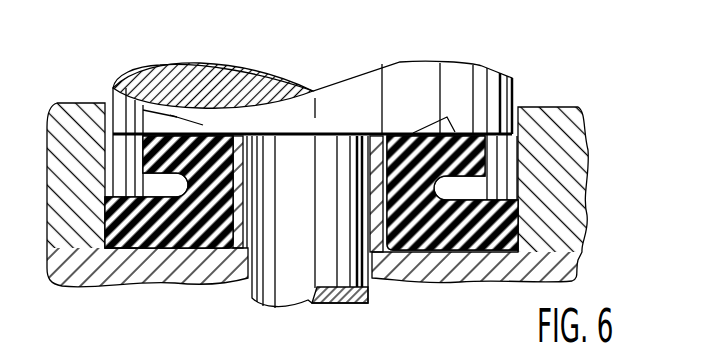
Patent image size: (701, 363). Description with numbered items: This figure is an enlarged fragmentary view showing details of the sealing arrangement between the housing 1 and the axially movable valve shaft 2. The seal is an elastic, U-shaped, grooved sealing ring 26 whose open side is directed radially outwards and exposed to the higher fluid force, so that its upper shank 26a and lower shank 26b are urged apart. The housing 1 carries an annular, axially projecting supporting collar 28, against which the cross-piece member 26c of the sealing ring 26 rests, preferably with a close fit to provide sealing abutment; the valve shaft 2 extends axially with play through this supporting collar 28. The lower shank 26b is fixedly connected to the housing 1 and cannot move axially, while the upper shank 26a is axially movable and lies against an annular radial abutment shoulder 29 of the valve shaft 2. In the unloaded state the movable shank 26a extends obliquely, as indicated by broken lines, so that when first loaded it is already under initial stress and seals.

The housing 1 is at (603, 237).
The valve shaft 2 is at (350, 110).
The sealing ring 26 is at (163, 305).
The upper shank 26a is at (157, 133).
The lower shank 26b is at (113, 305).
The cross-piece member 26c is at (233, 157).
The supporting collar 28 is at (233, 303).
The abutment shoulder 29 is at (540, 88).